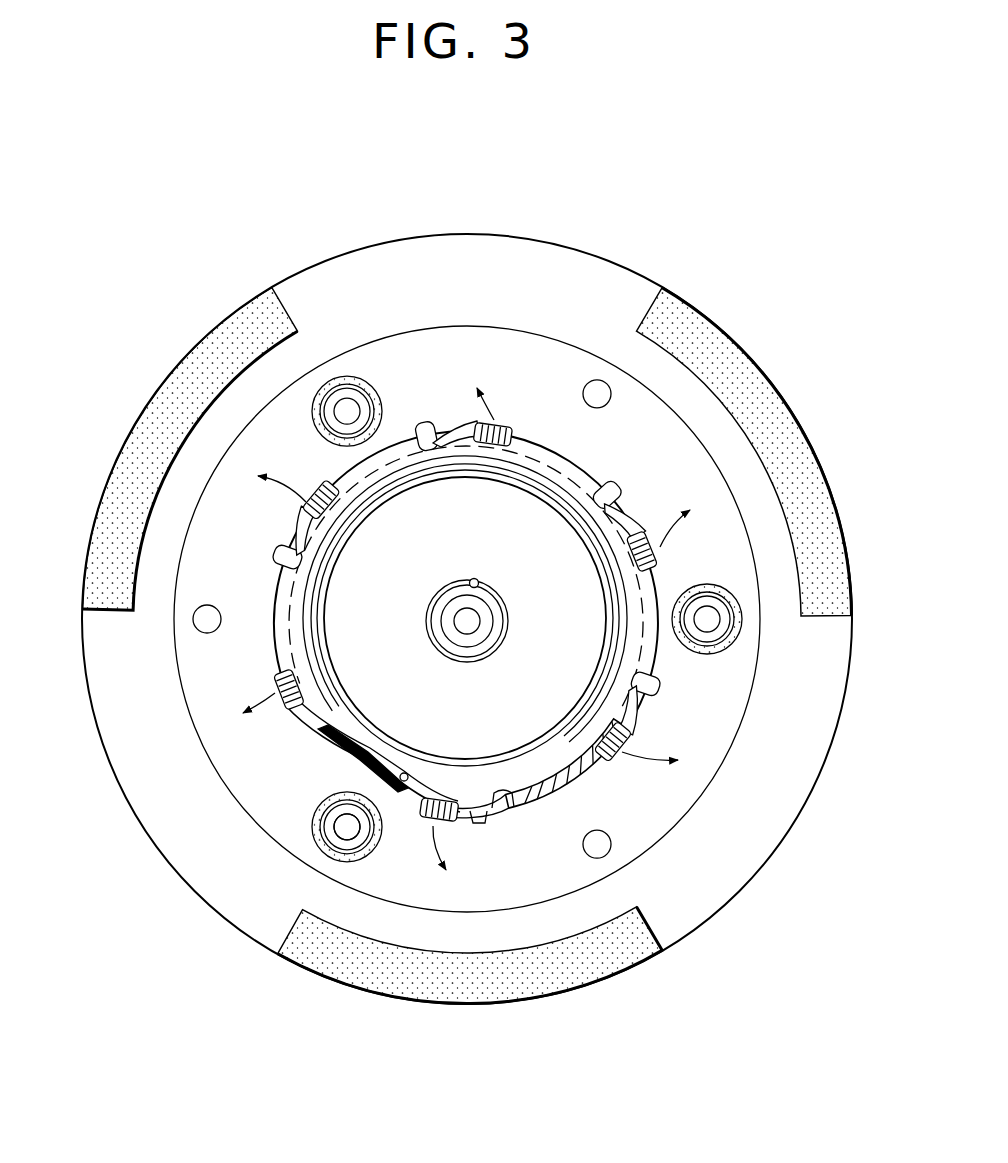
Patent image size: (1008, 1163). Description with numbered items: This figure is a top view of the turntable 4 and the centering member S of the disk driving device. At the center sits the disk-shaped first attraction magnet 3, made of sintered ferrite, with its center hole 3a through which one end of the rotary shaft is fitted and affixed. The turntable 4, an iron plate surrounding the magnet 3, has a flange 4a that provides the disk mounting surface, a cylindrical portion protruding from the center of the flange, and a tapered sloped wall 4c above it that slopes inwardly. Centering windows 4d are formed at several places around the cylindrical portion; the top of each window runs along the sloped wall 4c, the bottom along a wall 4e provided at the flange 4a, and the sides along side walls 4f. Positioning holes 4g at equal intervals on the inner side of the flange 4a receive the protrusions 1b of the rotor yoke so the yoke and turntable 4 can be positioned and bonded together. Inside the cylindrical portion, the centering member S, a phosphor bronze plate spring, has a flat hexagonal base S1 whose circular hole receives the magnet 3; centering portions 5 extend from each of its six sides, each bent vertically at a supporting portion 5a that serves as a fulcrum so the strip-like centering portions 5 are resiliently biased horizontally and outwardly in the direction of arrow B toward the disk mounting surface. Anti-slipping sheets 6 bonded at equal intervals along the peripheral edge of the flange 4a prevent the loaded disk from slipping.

The protrusion 1b is at (352, 826).
The first attraction magnet 3 is at (547, 668).
The center hole 3a is at (483, 583).
The turntable 4 is at (632, 268).
The flange 4a is at (688, 743).
The sloped wall 4c is at (633, 600).
The centering window 4d is at (617, 497).
The wall 4e is at (483, 820).
The side wall 4f is at (498, 815).
The positioning hole 4g is at (328, 840).
The centering portion 5 is at (284, 708).
The supporting portion 5a is at (547, 782).
The anti-slipping sheet 6 is at (157, 410).
The centering member S is at (430, 427).
The base S1 is at (327, 708).
The arrow B is at (465, 618).